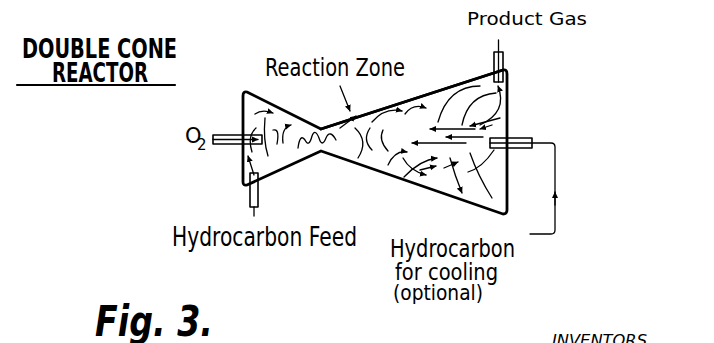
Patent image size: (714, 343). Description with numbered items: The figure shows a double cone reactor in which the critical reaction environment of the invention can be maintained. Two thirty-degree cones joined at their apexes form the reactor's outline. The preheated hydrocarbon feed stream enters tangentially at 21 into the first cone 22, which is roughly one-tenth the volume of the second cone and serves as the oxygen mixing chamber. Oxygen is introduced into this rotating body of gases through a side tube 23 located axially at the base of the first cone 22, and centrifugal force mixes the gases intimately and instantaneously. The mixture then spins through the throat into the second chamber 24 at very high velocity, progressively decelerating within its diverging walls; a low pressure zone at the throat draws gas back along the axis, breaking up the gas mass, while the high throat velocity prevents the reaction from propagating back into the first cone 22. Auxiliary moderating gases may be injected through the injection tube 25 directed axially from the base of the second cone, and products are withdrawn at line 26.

The tangential feed inlet 21 is at (260, 212).
The first cone 22 is at (243, 104).
The side tube 23 is at (209, 142).
The second chamber 24 is at (438, 90).
The injection tube 25 is at (556, 163).
The product withdrawal line 26 is at (505, 48).